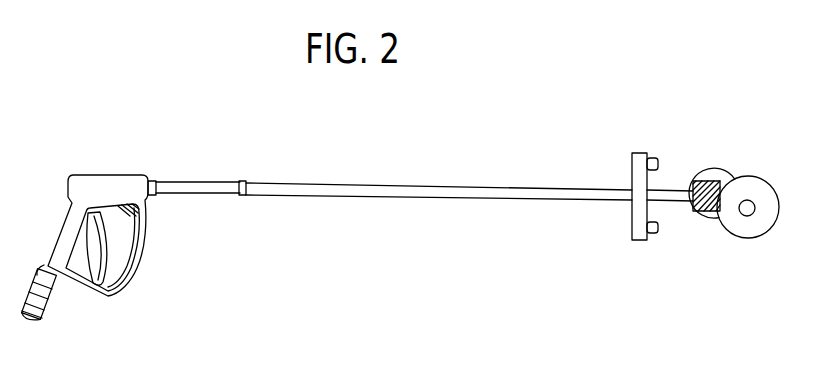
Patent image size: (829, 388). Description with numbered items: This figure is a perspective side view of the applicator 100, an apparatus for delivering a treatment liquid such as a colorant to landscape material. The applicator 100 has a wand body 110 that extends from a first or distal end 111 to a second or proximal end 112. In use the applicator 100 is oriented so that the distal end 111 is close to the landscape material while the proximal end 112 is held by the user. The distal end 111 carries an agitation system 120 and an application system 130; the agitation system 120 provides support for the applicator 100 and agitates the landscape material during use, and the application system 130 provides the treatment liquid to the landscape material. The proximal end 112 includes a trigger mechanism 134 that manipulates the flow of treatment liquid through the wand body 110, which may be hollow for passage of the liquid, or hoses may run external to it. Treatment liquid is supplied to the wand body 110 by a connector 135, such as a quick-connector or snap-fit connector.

The applicator 100 is at (497, 148).
The wand body 110 is at (361, 186).
The distal end 111 is at (765, 179).
The proximal end 112 is at (105, 182).
The agitation system 120 is at (673, 254).
The application system 130 is at (646, 152).
The trigger mechanism 134 is at (103, 247).
The connector 135 is at (42, 317).